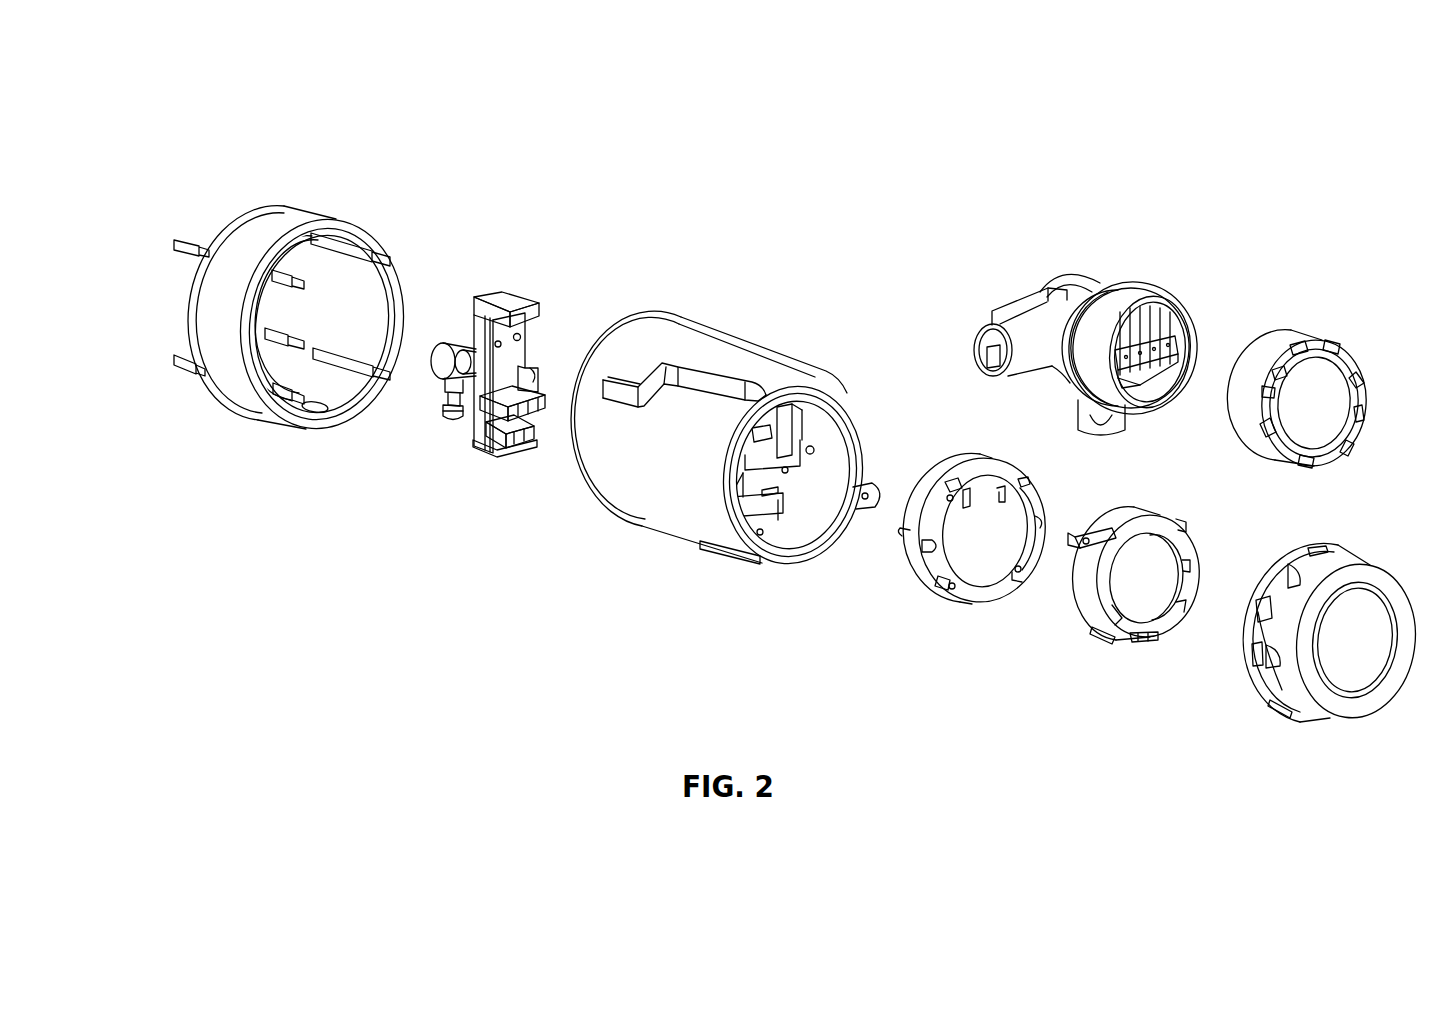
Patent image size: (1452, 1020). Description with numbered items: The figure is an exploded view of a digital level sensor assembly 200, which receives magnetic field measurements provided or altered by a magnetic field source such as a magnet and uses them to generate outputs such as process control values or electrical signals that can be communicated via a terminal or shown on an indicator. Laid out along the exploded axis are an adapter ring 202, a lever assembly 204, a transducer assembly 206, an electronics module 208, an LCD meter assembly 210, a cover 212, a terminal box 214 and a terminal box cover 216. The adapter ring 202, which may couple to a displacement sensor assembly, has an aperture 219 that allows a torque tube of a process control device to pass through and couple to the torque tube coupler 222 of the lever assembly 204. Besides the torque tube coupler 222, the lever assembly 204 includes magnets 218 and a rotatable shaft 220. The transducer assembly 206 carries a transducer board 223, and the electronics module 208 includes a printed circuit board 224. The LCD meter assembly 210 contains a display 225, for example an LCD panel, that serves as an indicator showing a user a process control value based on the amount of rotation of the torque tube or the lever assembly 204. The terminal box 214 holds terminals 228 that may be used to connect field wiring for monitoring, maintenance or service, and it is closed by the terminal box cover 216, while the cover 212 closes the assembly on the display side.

The digital level sensor assembly 200 is at (228, 50).
The adapter ring 202 is at (290, 217).
The lever assembly 204 is at (453, 459).
The transducer assembly 206 is at (715, 387).
The electronics module 208 is at (913, 547).
The LCD meter assembly 210 is at (1118, 623).
The cover 212 is at (1282, 675).
The terminal box 214 is at (1050, 296).
The terminal box cover 216 is at (1303, 342).
The magnets 218 is at (497, 390).
The aperture 219 is at (325, 300).
The rotatable shaft 220 is at (443, 365).
The torque tube coupler 222 is at (452, 350).
The transducer board 223 is at (770, 477).
The printed circuit board 224 is at (980, 558).
The display 225 is at (1153, 597).
The terminals 228 is at (1180, 357).